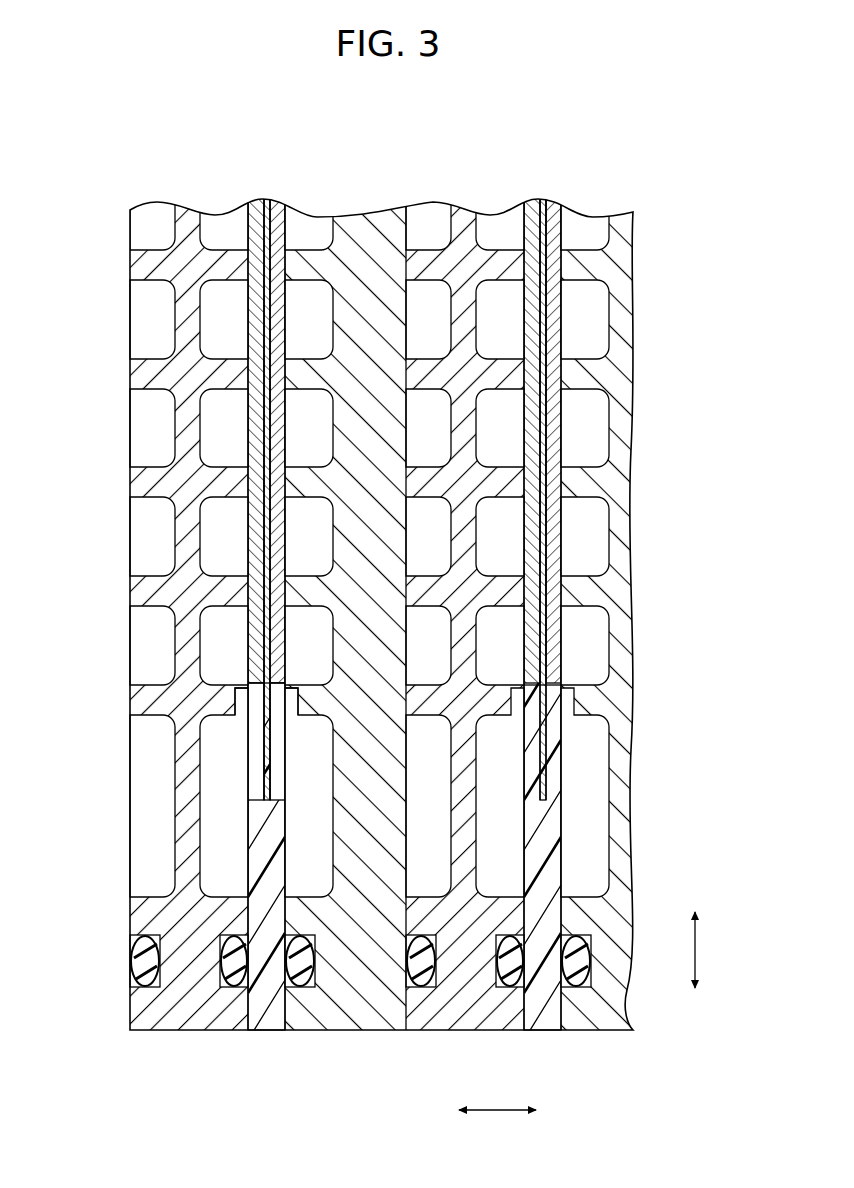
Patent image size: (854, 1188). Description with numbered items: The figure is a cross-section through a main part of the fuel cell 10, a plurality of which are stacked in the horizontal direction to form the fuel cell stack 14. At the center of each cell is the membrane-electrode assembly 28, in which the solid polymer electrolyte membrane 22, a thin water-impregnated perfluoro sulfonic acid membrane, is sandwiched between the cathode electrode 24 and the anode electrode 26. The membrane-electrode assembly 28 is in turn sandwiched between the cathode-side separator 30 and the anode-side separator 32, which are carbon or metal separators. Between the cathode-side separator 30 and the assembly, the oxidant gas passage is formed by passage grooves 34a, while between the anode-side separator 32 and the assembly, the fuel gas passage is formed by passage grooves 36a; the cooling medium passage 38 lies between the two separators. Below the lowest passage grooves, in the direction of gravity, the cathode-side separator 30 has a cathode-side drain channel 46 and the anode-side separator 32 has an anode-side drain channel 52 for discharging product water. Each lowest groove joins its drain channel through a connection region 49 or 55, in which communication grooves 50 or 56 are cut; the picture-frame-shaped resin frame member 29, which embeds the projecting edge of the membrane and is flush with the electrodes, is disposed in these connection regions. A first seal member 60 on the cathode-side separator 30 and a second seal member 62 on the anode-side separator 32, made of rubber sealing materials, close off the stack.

The fuel cell 10 is at (426, 107).
The fuel cell stack 14 is at (462, 107).
The anode-side separator 32 is at (187, 202).
The cathode-side separator 30 is at (325, 210).
The membrane-electrode assembly 28 is at (258, 198).
The cathode electrode 24 is at (265, 300).
The solid polymer electrolyte membrane 22 is at (267, 335).
The anode electrode 26 is at (278, 367).
The cooling medium passage 38 is at (130, 437).
The passage groove 36a is at (215, 455).
The passage groove 34a is at (300, 530).
The communication groove 56 is at (245, 683).
The communication groove 50 is at (288, 683).
The connection region 55 is at (253, 718).
The connection region 49 is at (282, 715).
The anode-side drain channel 52 is at (220, 790).
The cathode-side drain channel 46 is at (300, 835).
The second seal member 62 is at (228, 975).
The first seal member 60 is at (300, 975).
The frame member 29 is at (268, 1010).